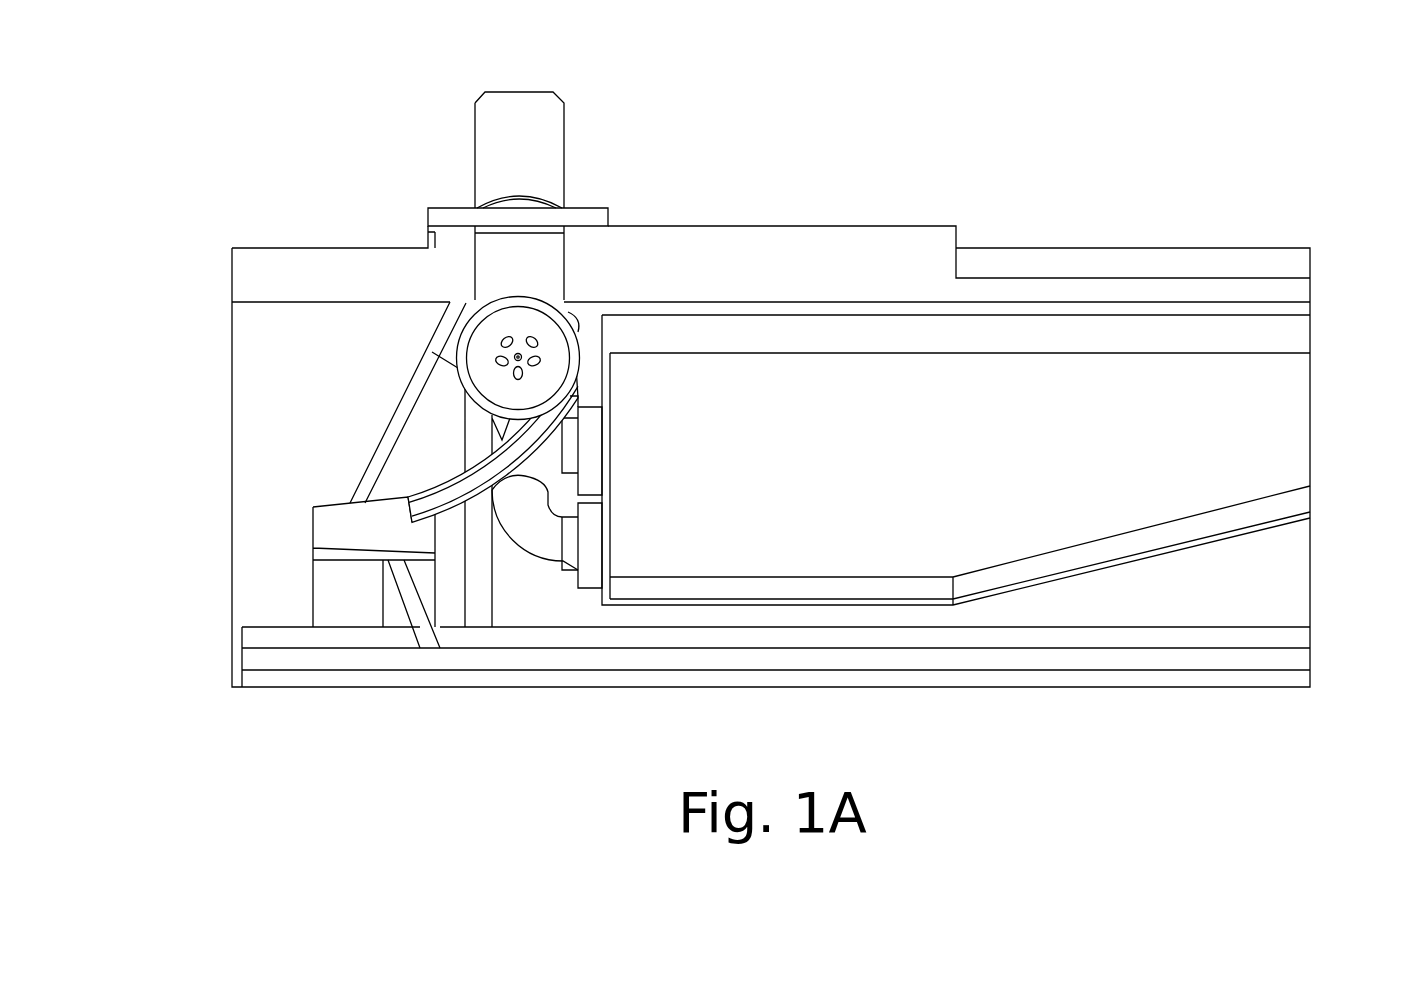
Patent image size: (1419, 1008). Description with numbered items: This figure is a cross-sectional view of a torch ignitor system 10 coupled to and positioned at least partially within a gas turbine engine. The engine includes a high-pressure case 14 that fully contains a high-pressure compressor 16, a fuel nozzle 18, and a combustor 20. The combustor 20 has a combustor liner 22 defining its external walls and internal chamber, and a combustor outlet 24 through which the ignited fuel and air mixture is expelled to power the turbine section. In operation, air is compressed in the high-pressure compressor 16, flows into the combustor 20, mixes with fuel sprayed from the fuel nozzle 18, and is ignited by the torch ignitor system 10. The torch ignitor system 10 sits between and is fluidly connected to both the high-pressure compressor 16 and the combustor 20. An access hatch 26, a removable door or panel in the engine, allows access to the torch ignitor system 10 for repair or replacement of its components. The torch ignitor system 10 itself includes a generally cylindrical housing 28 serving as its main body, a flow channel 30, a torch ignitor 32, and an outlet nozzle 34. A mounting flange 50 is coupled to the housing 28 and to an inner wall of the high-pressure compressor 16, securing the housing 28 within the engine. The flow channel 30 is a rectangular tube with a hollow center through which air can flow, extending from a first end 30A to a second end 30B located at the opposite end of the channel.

The torch ignitor system 10 is at (630, 264).
The high-pressure case 14 is at (923, 242).
The high-pressure compressor 16 is at (423, 540).
The fuel nozzle 18 is at (587, 466).
The combustor 20 is at (1026, 398).
The combustor liner 22 is at (1164, 335).
The combustor outlet 24 is at (1198, 437).
The access hatch 26 is at (458, 220).
The housing 28 is at (586, 304).
The flow channel 30 is at (457, 490).
The first end 30A is at (407, 527).
The second end 30B is at (574, 412).
The torch ignitor 32 is at (547, 356).
The outlet nozzle 34 is at (592, 378).
The mounting flange 50 is at (452, 343).